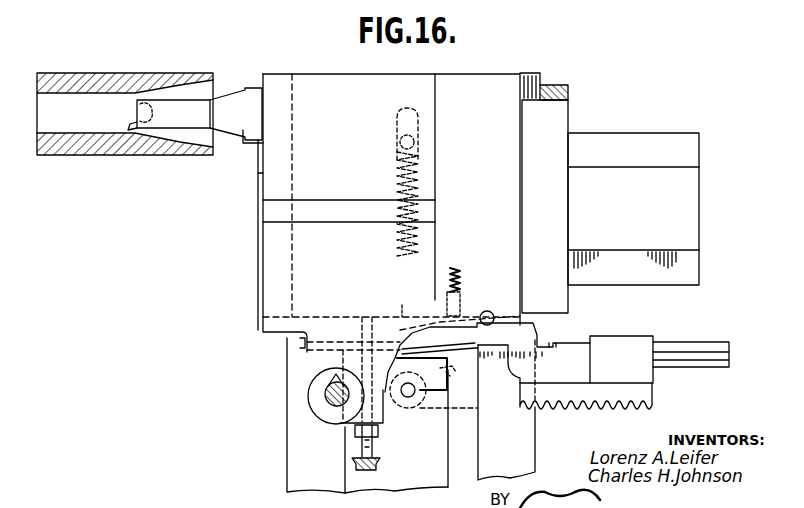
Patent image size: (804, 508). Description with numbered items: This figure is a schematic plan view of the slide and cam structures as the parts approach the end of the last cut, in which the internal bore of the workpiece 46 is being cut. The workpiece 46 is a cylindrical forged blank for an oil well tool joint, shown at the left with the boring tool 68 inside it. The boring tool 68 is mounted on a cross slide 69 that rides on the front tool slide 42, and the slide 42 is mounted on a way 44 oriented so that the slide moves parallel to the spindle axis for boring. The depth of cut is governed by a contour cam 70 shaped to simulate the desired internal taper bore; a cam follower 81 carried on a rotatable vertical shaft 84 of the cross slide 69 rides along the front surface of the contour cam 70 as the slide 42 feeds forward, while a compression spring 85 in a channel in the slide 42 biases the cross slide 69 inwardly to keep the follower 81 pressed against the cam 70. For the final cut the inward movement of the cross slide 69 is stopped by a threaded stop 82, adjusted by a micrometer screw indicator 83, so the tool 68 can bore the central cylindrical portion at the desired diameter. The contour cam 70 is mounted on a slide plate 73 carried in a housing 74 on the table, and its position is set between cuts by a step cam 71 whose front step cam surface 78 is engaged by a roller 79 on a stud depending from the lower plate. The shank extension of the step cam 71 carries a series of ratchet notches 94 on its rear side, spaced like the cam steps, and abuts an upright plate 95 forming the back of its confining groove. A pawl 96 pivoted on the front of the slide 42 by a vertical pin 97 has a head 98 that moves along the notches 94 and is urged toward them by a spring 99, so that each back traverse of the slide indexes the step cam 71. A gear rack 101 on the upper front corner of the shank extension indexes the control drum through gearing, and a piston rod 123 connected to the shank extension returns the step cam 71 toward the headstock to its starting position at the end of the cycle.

The front tool slide 42 is at (569, 114).
The way 44 is at (679, 145).
The workpiece 46 is at (118, 158).
The boring tool 68 is at (137, 112).
The cross slide 69 is at (273, 183).
The contour cam 70 is at (383, 389).
The step cam 71 is at (446, 428).
The slide plate 73 is at (410, 476).
The housing 74 is at (478, 446).
The step cam surface 78 is at (489, 344).
The roller 79 is at (403, 400).
The cam follower 81 is at (333, 379).
The threaded stop 82 is at (358, 443).
The micrometer screw indicator 83 is at (354, 463).
The rotatable vertical shaft 84 is at (326, 400).
The compression spring 85 is at (418, 196).
The ratchet notches 94 is at (551, 346).
The upright plate 95 is at (300, 343).
The pawl 96 is at (460, 311).
The vertical pin 97 is at (490, 312).
The pawl head 98 is at (360, 324).
The spring 99 is at (461, 273).
The gear rack 101 is at (580, 402).
The piston rod 123 is at (689, 342).